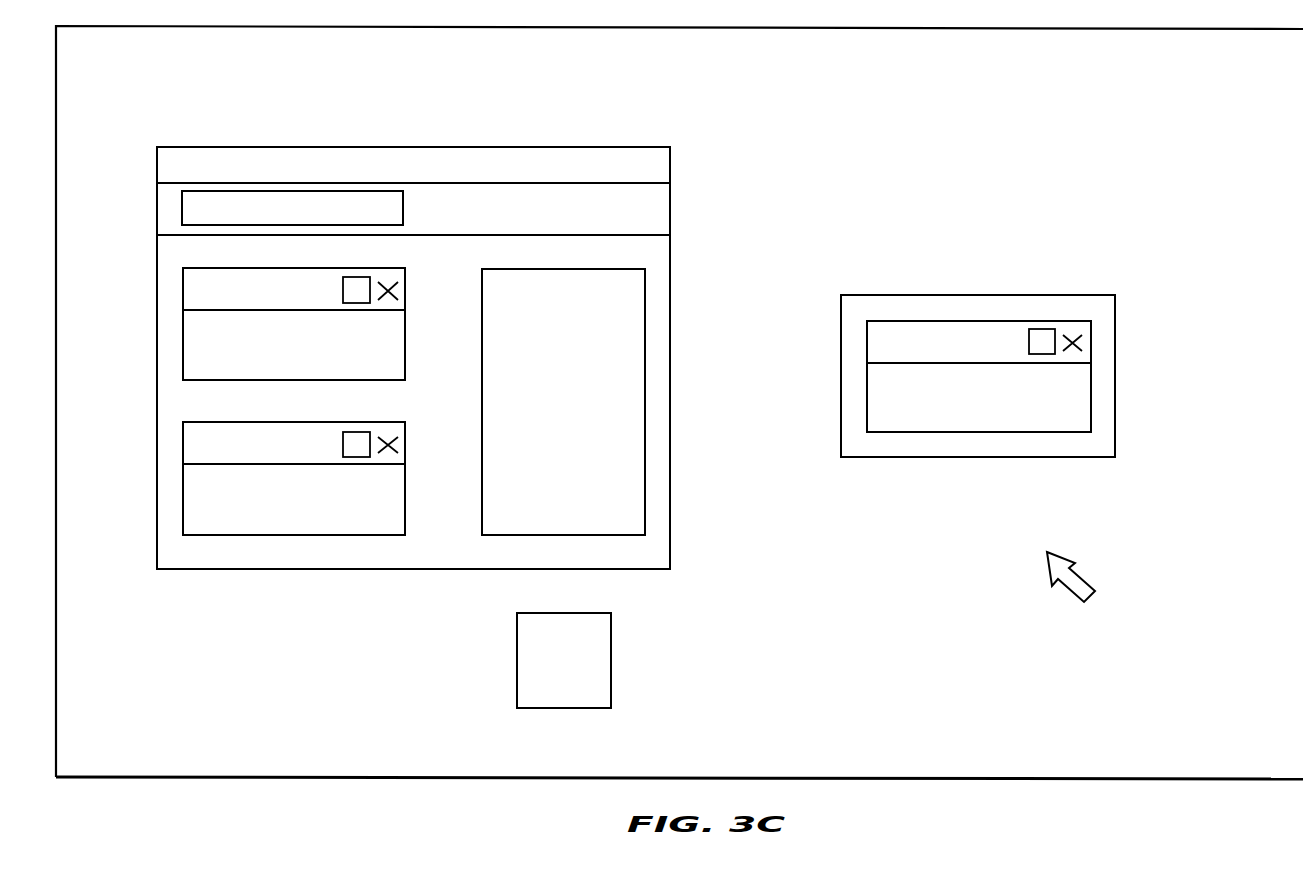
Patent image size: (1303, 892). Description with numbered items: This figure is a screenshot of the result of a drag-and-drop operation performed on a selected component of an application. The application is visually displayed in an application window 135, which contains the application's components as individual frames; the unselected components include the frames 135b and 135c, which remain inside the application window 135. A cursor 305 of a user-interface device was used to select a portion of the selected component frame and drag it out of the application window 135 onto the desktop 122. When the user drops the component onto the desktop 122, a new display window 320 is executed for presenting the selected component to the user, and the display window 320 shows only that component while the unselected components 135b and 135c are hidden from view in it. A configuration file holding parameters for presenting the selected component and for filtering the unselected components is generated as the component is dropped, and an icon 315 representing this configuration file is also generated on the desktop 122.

The desktop 122 is at (1190, 780).
The application window 135 is at (578, 147).
The component frame 135b is at (182, 500).
The component frame 135c is at (645, 447).
The cursor 305 is at (1080, 571).
The icon 315 is at (611, 643).
The display window 320 is at (1053, 457).